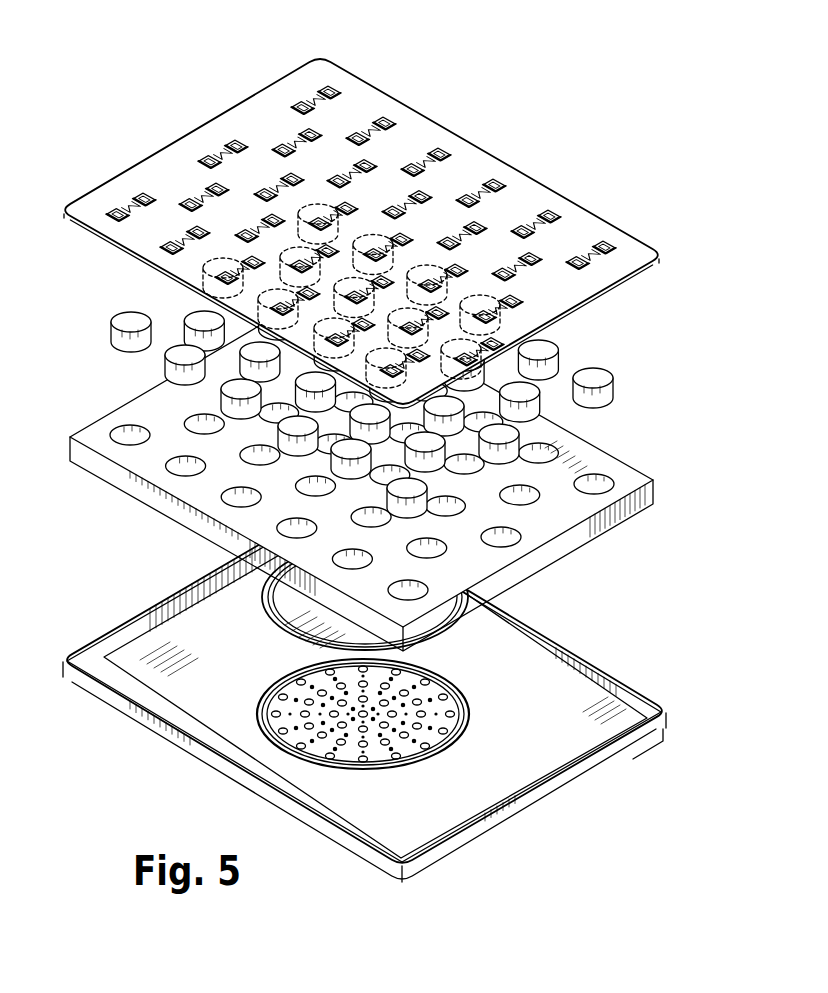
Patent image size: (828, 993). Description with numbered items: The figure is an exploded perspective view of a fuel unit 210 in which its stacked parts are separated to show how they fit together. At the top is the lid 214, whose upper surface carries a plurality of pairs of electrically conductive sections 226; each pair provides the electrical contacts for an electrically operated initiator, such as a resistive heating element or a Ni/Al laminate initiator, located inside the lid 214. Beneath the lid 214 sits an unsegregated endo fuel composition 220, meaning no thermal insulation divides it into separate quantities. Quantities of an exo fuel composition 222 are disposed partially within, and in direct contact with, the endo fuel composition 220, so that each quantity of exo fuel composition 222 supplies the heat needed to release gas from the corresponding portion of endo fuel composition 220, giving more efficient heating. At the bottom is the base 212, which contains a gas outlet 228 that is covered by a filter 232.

The fuel unit 210 is at (106, 91).
The base 212 is at (588, 778).
The lid 214 is at (370, 81).
The unsegregated endo fuel composition 220 is at (113, 472).
The exo fuel composition 222 is at (125, 320).
The electrically conductive sections 226 is at (470, 192).
The gas outlet 228 is at (247, 752).
The filter 232 is at (270, 628).